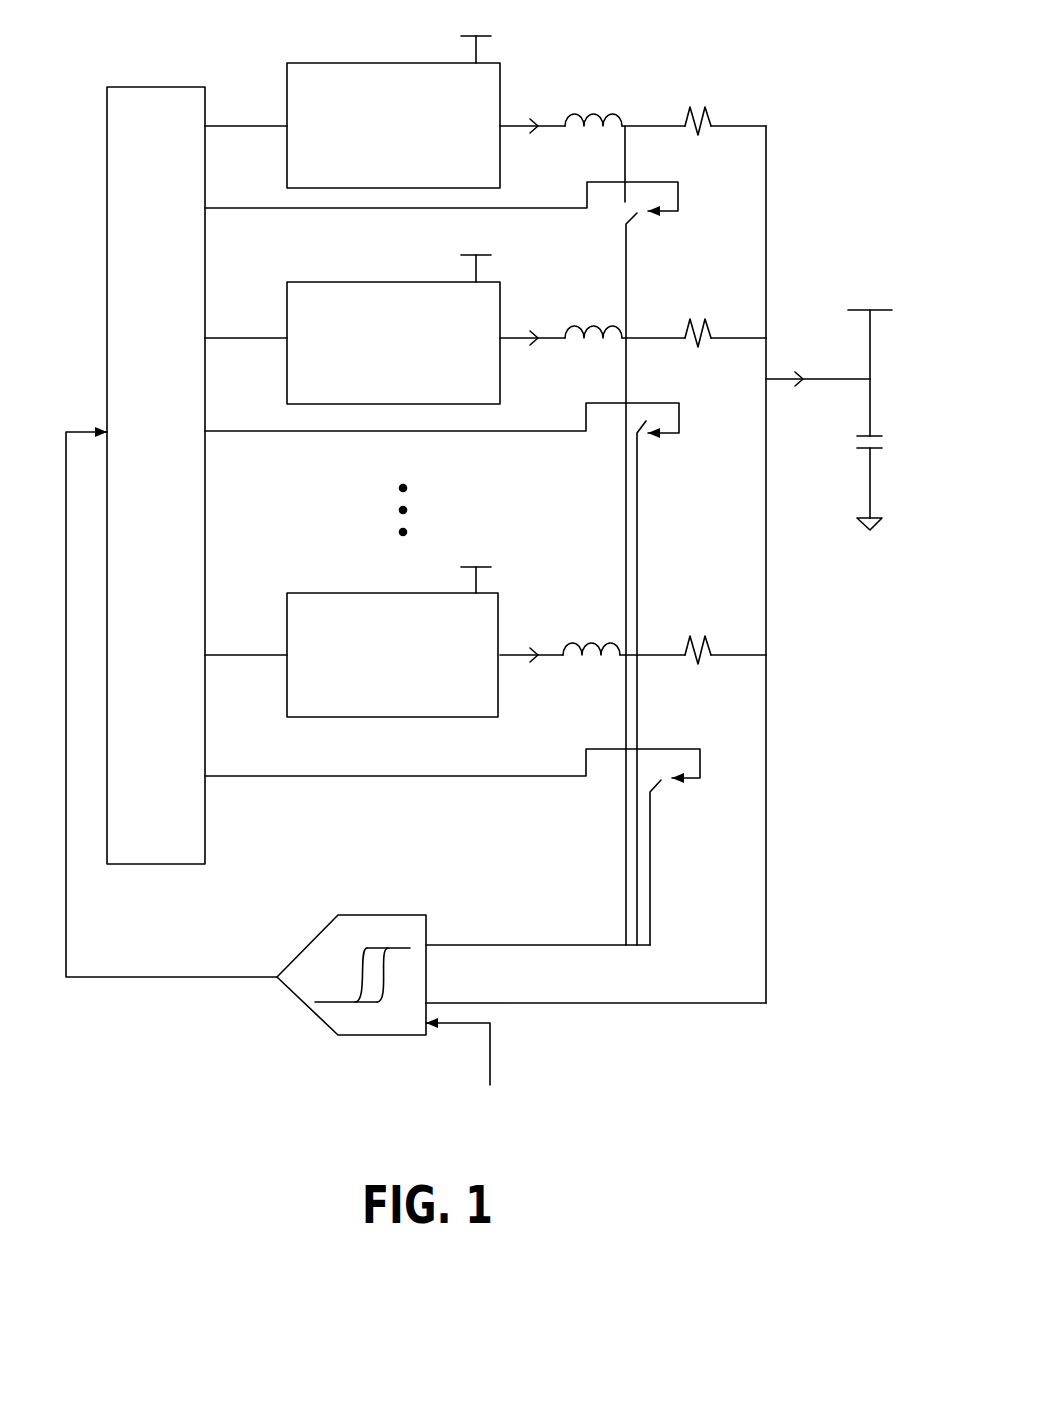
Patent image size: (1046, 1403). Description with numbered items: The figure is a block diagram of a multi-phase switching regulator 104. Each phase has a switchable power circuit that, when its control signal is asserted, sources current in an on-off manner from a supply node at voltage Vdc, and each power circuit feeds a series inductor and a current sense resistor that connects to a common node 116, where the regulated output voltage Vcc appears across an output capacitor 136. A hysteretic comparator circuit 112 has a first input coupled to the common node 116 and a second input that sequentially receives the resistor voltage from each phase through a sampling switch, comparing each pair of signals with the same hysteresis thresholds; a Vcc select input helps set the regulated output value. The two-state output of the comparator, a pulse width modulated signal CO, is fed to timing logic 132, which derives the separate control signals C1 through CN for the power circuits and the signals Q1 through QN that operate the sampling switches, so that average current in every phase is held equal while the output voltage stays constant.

The switching regulator 104 is at (741, 1082).
The hysteretic comparator circuit 112 is at (360, 915).
The common node 116 is at (764, 124).
The timing logic 132 is at (152, 87).
The output capacitor 136 is at (880, 434).